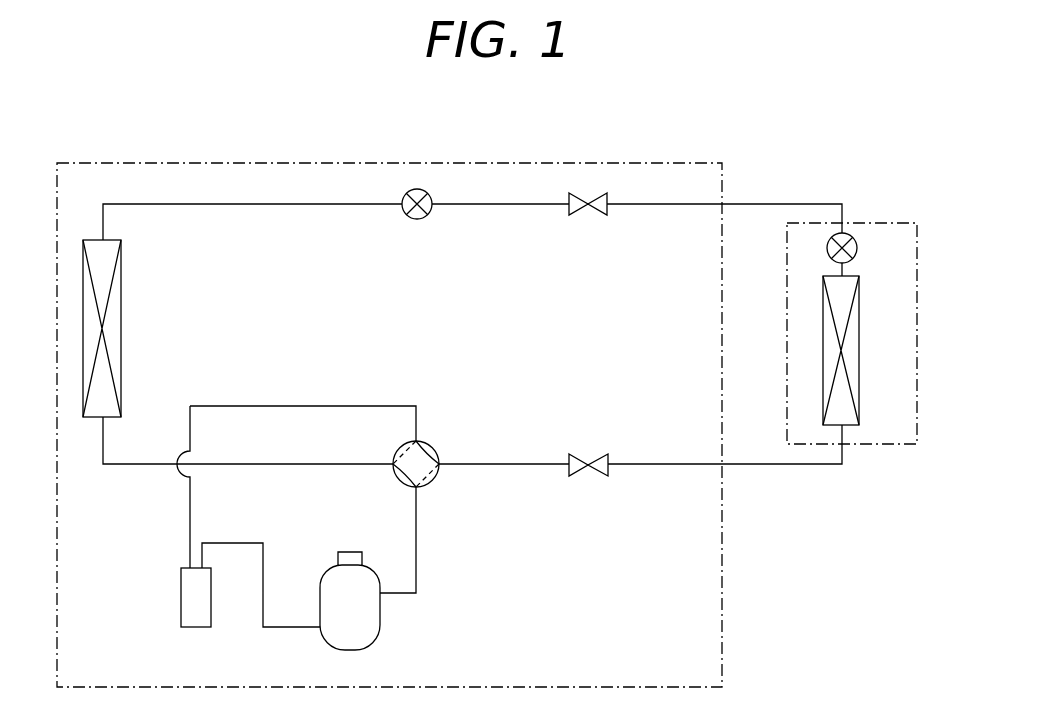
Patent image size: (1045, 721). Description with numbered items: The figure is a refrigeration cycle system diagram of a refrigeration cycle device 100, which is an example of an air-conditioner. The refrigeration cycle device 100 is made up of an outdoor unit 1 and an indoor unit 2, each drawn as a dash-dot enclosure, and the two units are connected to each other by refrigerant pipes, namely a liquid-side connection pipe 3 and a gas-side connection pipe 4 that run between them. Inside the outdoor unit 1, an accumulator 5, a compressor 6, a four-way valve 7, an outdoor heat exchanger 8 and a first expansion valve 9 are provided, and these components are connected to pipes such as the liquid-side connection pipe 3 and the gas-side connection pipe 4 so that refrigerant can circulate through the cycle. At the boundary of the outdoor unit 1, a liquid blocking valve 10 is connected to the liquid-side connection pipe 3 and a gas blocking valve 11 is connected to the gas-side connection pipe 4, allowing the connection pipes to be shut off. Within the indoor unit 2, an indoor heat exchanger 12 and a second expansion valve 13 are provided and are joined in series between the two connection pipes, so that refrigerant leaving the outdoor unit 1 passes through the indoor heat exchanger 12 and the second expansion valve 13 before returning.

The refrigeration cycle device 100 is at (598, 125).
The outdoor unit 1 is at (355, 164).
The indoor unit 2 is at (880, 444).
The liquid-side connection pipe 3 is at (745, 204).
The gas-side connection pipe 4 is at (750, 464).
The accumulator 5 is at (186, 600).
The compressor 6 is at (380, 617).
The four-way valve 7 is at (430, 447).
The outdoor heat exchanger 8 is at (121, 302).
The first expansion valve 9 is at (417, 219).
The liquid blocking valve 10 is at (598, 215).
The gas blocking valve 11 is at (600, 455).
The indoor heat exchanger 12 is at (852, 348).
The second expansion valve 13 is at (857, 252).